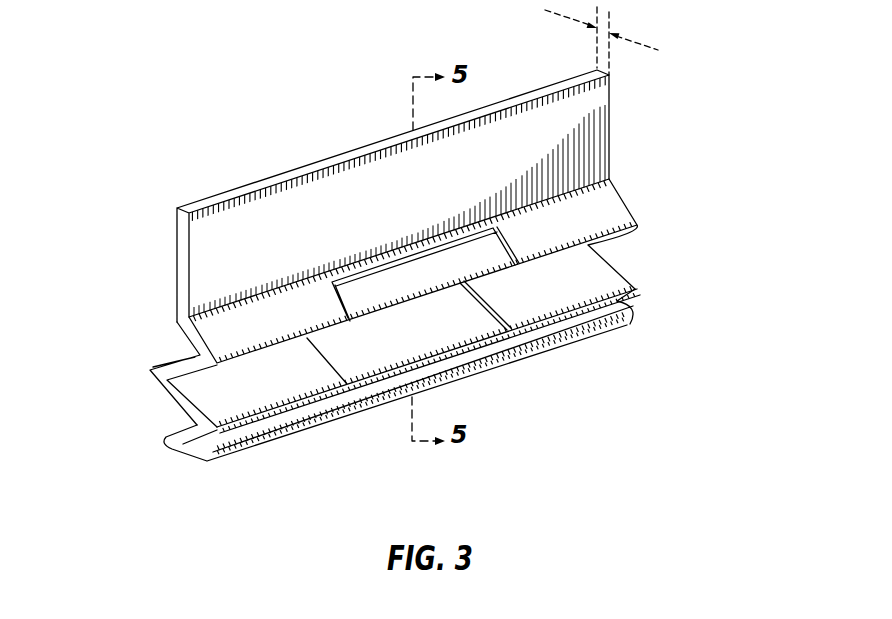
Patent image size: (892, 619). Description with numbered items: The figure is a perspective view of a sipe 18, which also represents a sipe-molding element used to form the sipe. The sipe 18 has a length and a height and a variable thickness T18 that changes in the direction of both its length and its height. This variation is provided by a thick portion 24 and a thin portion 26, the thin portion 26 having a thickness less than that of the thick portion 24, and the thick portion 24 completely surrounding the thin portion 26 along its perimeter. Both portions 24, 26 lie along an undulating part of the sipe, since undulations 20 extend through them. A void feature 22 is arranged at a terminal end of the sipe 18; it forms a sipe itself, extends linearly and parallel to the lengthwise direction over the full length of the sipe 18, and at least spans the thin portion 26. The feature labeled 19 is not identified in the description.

The sipe 18 is at (238, 110).
The vertical plate 19 is at (177, 245).
The undulations 20 is at (636, 225).
The void feature 22 is at (188, 453).
The thick portion 24 is at (289, 253).
The thin portion 26 is at (442, 265).
The sipe thickness T18 is at (640, 43).